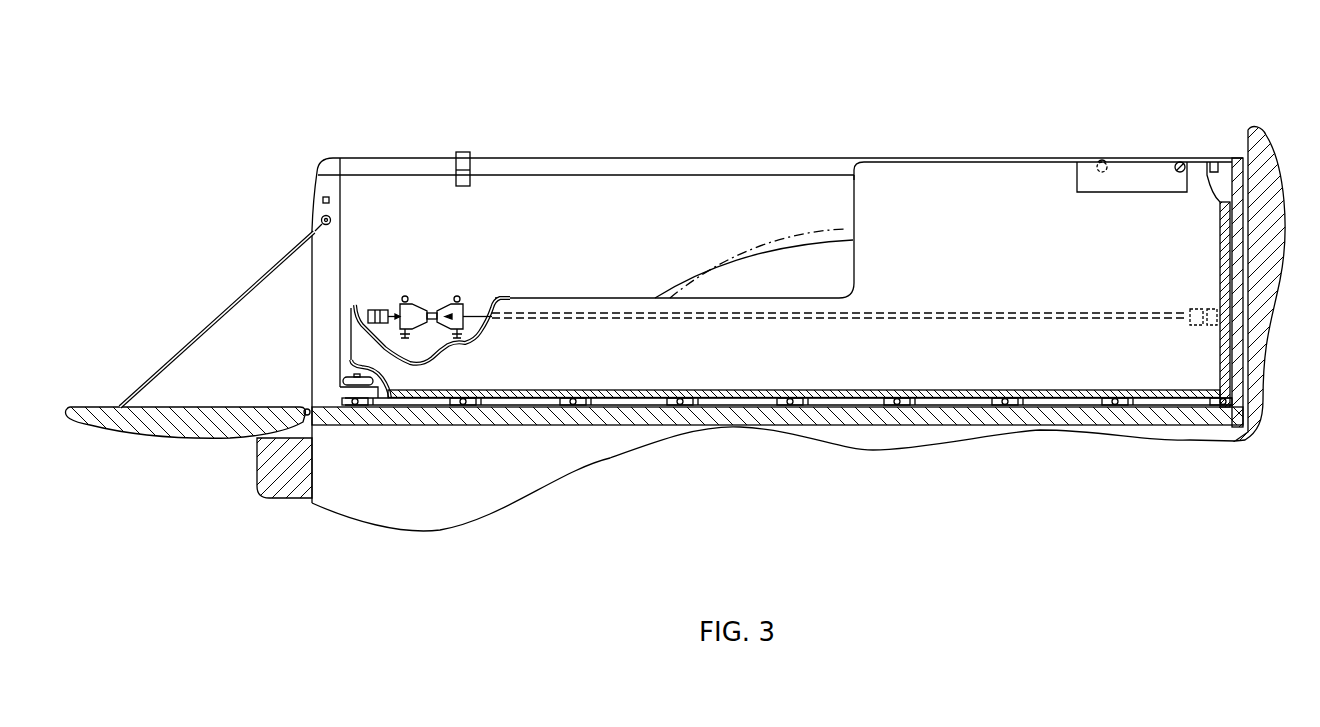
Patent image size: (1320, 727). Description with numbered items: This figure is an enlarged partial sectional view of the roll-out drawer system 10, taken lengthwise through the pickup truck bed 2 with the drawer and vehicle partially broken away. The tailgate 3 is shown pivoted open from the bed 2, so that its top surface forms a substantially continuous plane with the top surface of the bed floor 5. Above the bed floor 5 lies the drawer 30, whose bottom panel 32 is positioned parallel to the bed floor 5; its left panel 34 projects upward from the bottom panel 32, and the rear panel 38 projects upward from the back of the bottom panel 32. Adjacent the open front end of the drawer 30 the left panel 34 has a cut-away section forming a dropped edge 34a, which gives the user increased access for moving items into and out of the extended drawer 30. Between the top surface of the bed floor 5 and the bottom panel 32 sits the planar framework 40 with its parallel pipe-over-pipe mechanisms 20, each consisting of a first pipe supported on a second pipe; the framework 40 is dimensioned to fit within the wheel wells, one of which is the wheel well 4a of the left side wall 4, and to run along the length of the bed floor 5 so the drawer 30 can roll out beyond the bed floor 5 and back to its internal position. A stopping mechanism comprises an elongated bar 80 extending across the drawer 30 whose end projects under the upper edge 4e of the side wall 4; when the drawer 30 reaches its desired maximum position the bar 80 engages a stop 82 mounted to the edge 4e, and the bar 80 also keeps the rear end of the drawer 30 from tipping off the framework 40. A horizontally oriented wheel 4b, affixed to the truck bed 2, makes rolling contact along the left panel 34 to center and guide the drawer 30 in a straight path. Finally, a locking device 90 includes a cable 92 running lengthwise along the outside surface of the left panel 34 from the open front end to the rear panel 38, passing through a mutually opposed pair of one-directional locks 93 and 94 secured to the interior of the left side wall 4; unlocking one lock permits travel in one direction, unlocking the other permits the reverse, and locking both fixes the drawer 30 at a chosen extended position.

The bed 2 is at (265, 520).
The tailgate 3 is at (107, 410).
The left side wall 4 is at (705, 185).
The wheel well 4a is at (792, 263).
The horizontal wheel 4b is at (343, 380).
The upper edge 4e is at (660, 166).
The bed floor 5 is at (420, 418).
The roll-out drawer system 10 is at (271, 182).
The pipe-over-pipe mechanism 20 is at (348, 424).
The drawer 30 is at (1136, 371).
The bottom panel 32 is at (968, 391).
The left panel 34 is at (912, 200).
The dropped edge 34a is at (611, 298).
The rear panel 38 is at (1220, 233).
The planar framework 40 is at (843, 440).
The elongated bar 80 is at (1178, 163).
The stop 82 is at (456, 158).
The locking device 90 is at (446, 271).
The cable 92 is at (483, 300).
The one-directional lock 93 is at (400, 303).
The one-directional lock 94 is at (449, 298).